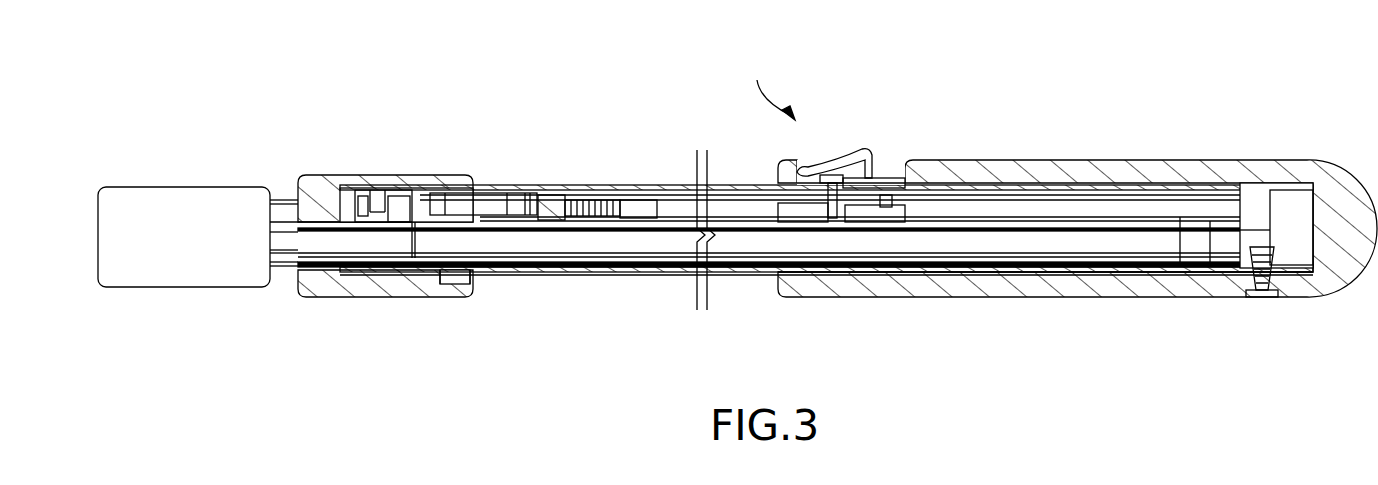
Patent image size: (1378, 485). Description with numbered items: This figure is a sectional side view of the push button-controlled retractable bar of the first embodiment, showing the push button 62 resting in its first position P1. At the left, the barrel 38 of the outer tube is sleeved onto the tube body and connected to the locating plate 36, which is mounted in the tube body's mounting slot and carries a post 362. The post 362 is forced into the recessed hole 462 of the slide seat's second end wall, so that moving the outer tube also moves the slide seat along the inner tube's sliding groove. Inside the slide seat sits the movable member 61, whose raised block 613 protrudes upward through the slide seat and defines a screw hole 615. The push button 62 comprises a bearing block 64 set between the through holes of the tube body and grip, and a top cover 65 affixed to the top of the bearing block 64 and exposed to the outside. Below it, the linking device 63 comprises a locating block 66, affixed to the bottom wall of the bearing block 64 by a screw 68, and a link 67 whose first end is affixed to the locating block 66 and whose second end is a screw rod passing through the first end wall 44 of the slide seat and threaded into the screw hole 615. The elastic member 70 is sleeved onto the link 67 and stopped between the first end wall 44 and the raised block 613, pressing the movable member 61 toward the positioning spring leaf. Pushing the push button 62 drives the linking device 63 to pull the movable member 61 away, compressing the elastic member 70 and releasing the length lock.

The barrel 38 is at (330, 176).
The locating plate 36 is at (358, 183).
The post 362 is at (378, 212).
The recessed hole 462 is at (397, 240).
The movable member 61 is at (487, 186).
The raised block 613 is at (548, 186).
The screw hole 615 is at (560, 210).
The elastic member 70 is at (594, 186).
The first end wall 44 is at (628, 186).
The push button 62 is at (879, 119).
The bearing block 64 is at (875, 163).
The top cover 65 is at (865, 160).
The screw 68 is at (828, 160).
The linking device 63 is at (819, 291).
The locating block 66 is at (858, 212).
The link 67 is at (733, 203).
The first position P1 is at (771, 86).